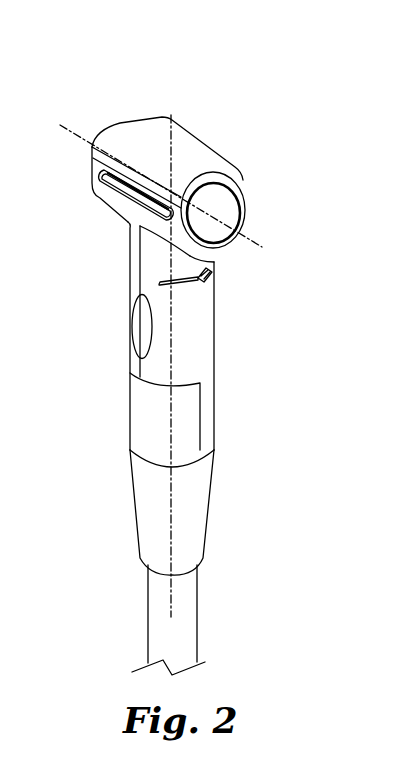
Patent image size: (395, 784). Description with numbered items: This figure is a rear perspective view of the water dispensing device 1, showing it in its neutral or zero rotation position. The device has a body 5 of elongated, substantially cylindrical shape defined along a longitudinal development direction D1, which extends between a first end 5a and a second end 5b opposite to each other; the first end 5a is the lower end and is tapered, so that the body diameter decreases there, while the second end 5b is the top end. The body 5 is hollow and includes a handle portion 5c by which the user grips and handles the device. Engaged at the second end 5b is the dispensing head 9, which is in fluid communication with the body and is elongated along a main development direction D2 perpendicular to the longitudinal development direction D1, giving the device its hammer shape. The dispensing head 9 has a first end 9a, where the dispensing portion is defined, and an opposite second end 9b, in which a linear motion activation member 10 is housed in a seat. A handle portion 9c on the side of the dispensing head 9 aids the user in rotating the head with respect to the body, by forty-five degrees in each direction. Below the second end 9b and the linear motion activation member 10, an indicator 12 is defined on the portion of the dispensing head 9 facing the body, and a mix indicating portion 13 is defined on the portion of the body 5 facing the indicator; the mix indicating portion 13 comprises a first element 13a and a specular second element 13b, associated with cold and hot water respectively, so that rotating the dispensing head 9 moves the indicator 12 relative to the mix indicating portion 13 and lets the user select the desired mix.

The water dispensing device 1 is at (213, 123).
The body 5 is at (298, 263).
The first end 5a is at (195, 535).
The second end 5b is at (203, 308).
The handle portion 5c is at (138, 327).
The dispensing head 9 is at (265, 220).
The first end 9a is at (127, 122).
The second end 9b is at (245, 185).
The handle portion 9c is at (120, 188).
The linear motion activation member 10 is at (215, 203).
The indicator 12 is at (210, 268).
The mix indicating portion 13 is at (150, 287).
The first element 13a is at (160, 281).
The second element 13b is at (213, 279).
The longitudinal development direction D1 is at (172, 600).
The main development direction D2 is at (60, 125).